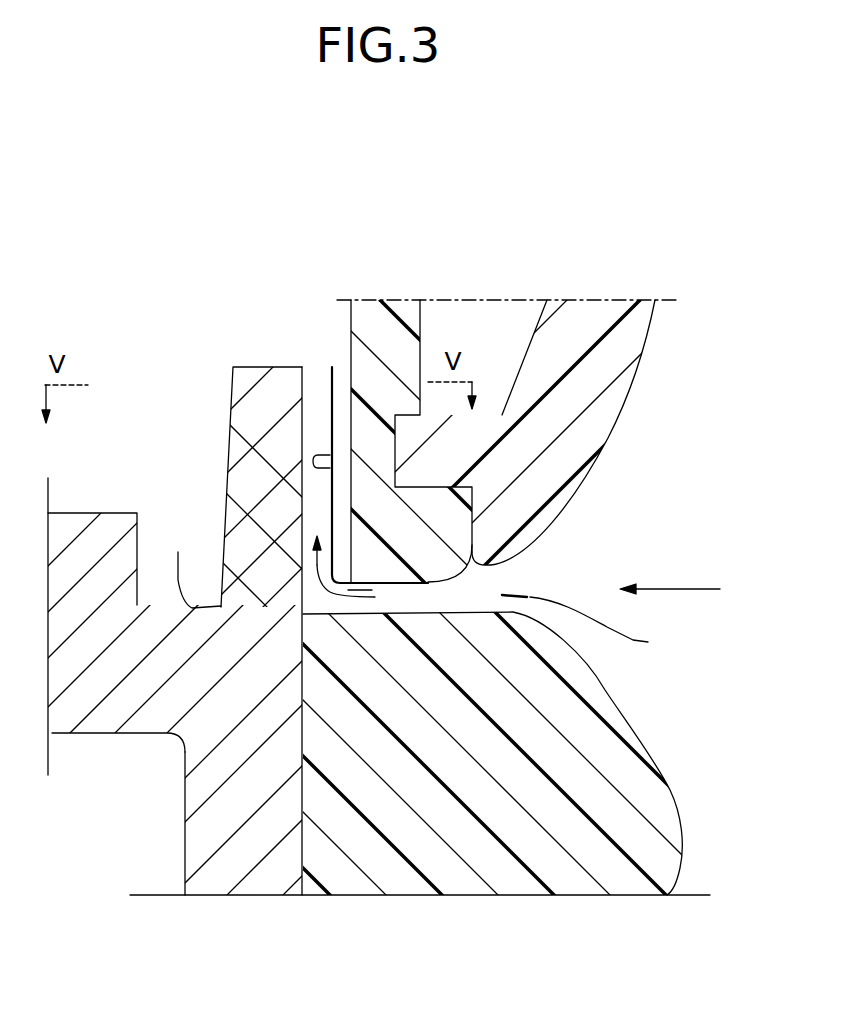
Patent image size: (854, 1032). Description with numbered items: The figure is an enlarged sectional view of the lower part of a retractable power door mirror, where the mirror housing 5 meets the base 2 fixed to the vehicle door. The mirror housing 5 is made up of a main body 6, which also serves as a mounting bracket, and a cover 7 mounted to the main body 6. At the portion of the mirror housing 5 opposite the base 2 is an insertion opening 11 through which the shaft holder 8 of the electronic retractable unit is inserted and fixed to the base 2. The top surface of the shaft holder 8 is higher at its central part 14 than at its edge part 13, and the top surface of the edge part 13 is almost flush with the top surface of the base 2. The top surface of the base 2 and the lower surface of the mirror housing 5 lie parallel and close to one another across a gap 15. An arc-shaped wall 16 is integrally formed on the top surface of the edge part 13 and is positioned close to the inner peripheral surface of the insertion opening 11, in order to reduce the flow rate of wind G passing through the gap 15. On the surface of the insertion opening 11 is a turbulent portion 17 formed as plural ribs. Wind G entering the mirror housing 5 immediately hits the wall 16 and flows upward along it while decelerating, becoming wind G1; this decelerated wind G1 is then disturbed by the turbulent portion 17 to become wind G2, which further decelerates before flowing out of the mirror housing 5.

The base 2 is at (403, 875).
The mirror housing 5 is at (457, 173).
The main body 6 is at (413, 302).
The cover 7 is at (567, 302).
The shaft holder 8 is at (272, 875).
The insertion opening 11 is at (345, 403).
The edge part 13 is at (190, 563).
The central part 14 is at (80, 513).
The gap 15 is at (640, 641).
The wall 16 is at (262, 393).
The turbulent portion 17 is at (332, 390).
The wind G is at (678, 589).
The wind G1 is at (312, 565).
The wind G2 is at (315, 460).